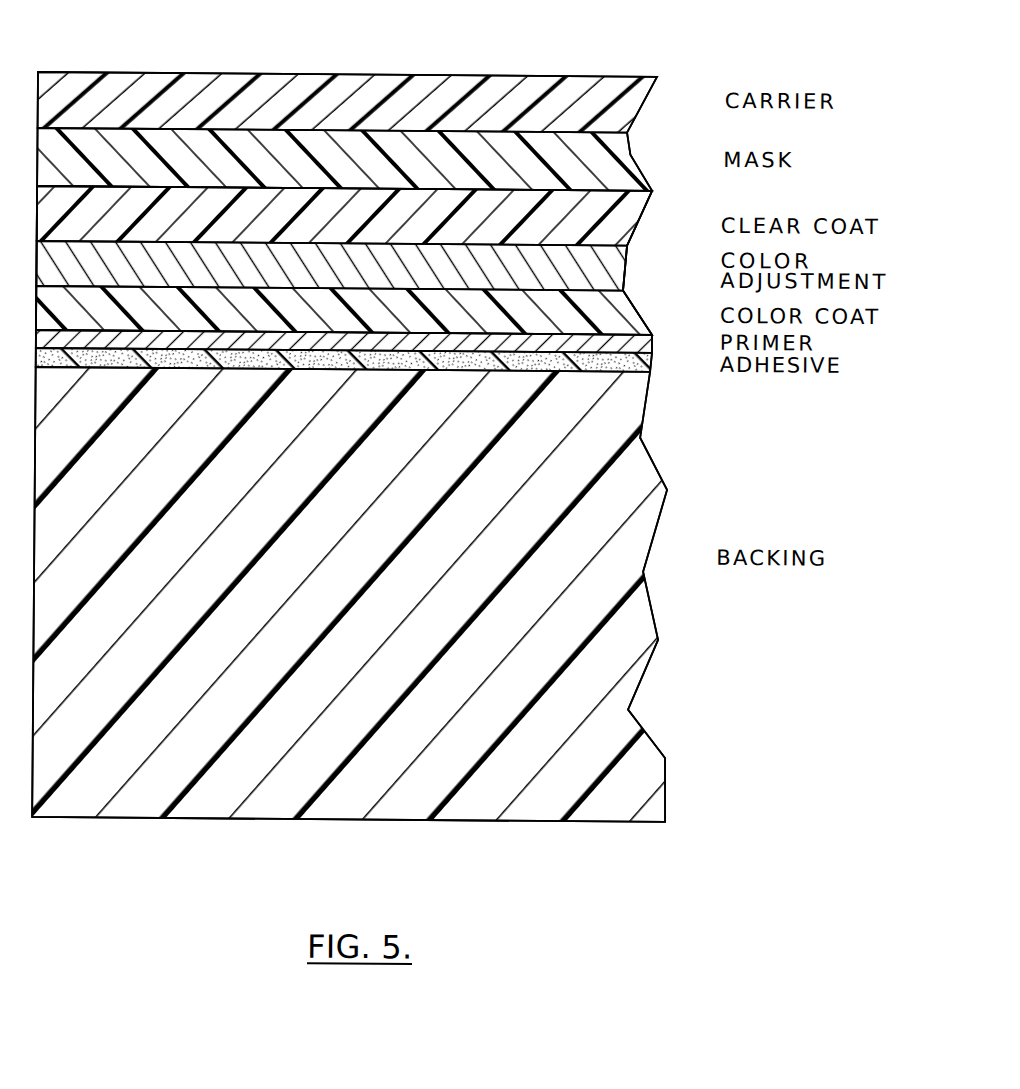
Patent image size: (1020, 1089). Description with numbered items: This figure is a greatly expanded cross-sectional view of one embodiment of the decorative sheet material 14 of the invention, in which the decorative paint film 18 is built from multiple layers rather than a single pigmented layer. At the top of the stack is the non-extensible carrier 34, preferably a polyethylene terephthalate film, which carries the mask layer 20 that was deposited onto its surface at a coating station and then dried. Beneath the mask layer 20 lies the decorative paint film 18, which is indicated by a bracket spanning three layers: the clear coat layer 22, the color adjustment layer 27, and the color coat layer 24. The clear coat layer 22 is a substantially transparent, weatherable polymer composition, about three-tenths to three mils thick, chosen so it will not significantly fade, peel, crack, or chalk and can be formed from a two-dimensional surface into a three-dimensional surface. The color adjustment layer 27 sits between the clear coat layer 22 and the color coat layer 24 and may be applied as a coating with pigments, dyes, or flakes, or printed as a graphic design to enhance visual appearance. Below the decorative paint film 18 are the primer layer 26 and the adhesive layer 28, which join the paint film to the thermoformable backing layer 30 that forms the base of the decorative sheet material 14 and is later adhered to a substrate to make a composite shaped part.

The decorative sheet material 14 is at (705, 58).
The carrier 34 is at (598, 88).
The mask layer 20 is at (634, 155).
The clear coat layer 22 is at (634, 202).
The color adjustment layer 27 is at (610, 258).
The decorative paint film 18 is at (665, 187).
The color coat layer 24 is at (619, 313).
The primer layer 26 is at (632, 343).
The adhesive layer 28 is at (625, 357).
The thermoformable backing layer 30 is at (629, 468).